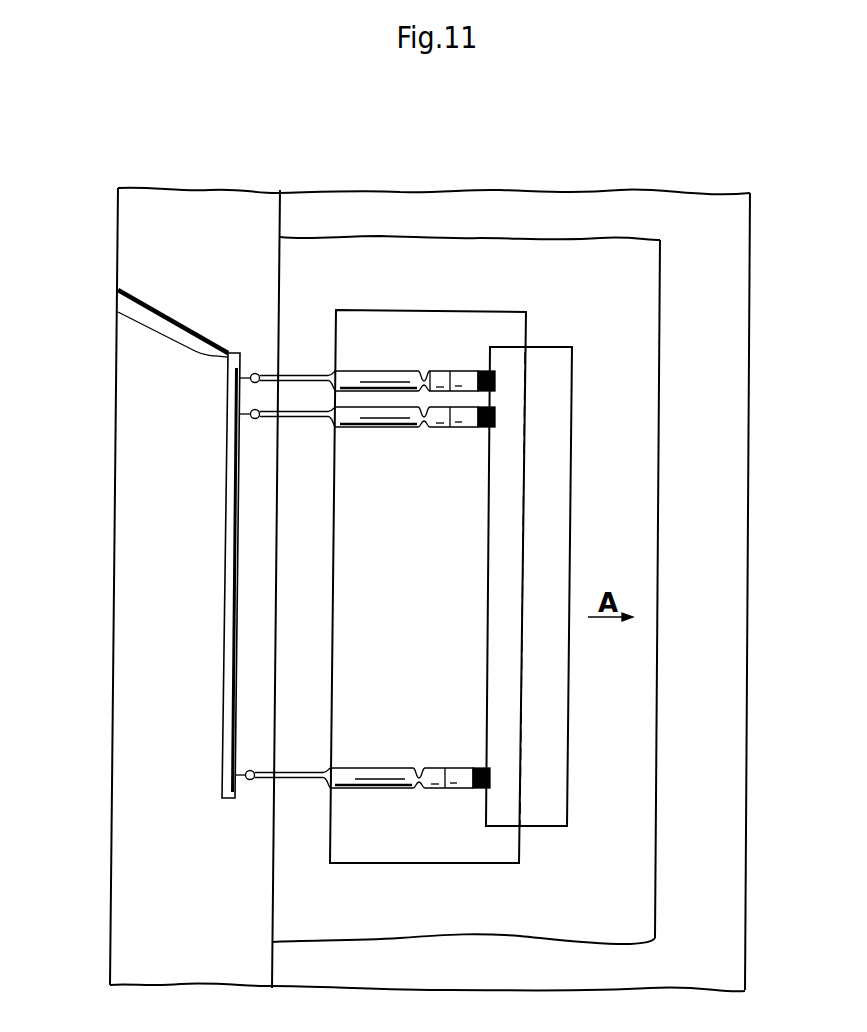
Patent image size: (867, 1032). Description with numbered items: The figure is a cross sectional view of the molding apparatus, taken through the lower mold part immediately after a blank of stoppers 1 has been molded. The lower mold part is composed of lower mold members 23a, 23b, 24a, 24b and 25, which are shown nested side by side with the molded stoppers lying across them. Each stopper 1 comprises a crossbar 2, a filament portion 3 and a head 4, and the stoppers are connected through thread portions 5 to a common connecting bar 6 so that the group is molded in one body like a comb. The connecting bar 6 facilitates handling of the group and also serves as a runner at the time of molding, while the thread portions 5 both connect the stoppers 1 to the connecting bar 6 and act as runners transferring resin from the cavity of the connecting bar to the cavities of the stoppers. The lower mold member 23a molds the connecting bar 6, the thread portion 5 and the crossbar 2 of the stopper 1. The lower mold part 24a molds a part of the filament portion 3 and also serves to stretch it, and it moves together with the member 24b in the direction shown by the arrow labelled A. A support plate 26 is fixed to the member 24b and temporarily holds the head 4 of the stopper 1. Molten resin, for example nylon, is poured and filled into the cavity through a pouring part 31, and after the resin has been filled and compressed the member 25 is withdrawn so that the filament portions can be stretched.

The stopper 1 is at (367, 258).
The crossbar 2 is at (254, 373).
The filament portion 3 is at (353, 372).
The head 4 is at (454, 351).
The thread portion 5 is at (246, 420).
The connecting bar 6 is at (230, 516).
The lower mold member 23a is at (193, 268).
The lower mold member 23b is at (707, 270).
The lower mold member 24a is at (312, 342).
The lower mold member 24b is at (618, 363).
The lower mold member 25 is at (427, 337).
The support plate 26 is at (543, 365).
The pouring part 31 is at (155, 318).